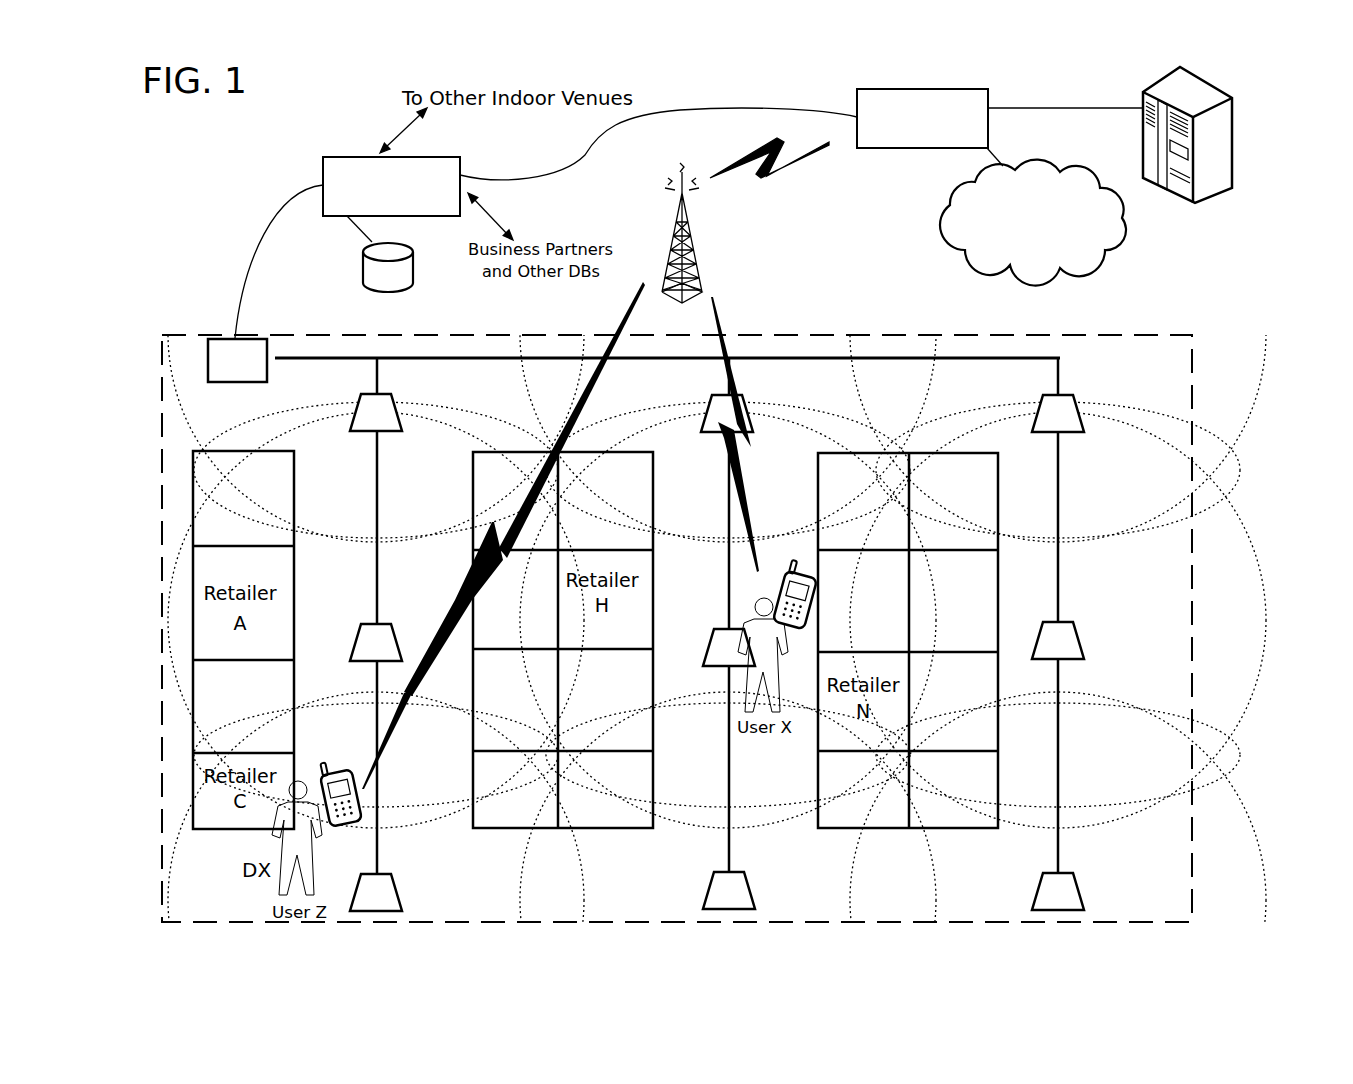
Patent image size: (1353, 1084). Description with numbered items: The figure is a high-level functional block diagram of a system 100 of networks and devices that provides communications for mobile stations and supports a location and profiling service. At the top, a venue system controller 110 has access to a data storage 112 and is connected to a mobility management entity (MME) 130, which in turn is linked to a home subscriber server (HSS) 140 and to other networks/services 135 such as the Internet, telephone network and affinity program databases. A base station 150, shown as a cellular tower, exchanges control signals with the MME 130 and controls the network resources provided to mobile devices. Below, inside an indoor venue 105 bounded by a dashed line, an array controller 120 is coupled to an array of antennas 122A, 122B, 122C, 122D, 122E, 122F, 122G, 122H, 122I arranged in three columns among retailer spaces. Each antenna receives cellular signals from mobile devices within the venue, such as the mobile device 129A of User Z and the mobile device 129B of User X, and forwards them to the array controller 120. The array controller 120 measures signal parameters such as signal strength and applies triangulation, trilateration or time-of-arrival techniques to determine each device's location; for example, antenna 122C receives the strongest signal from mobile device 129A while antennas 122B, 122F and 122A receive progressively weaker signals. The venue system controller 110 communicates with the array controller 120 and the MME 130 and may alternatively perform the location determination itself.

The system 100 is at (209, 126).
The indoor venue 105 is at (962, 343).
The venue system controller 110 is at (391, 186).
The data storage 112 is at (387, 282).
The array controller 120 is at (237, 360).
The antenna 122A is at (385, 393).
The antenna 122B is at (362, 626).
The antenna 122C is at (392, 886).
The antenna 122D is at (708, 414).
The antenna 122E is at (714, 632).
The antenna 122F is at (756, 897).
The antenna 122G is at (1078, 400).
The antenna 122H is at (1078, 640).
The antenna 122I is at (1080, 894).
The mobile device 129A is at (342, 807).
The mobile device 129B is at (799, 608).
The mobility management entity (MME) 130 is at (922, 118).
The other networks/services 135 is at (1033, 223).
The home subscriber server (HSS) 140 is at (1187, 168).
The base station 150 is at (747, 258).